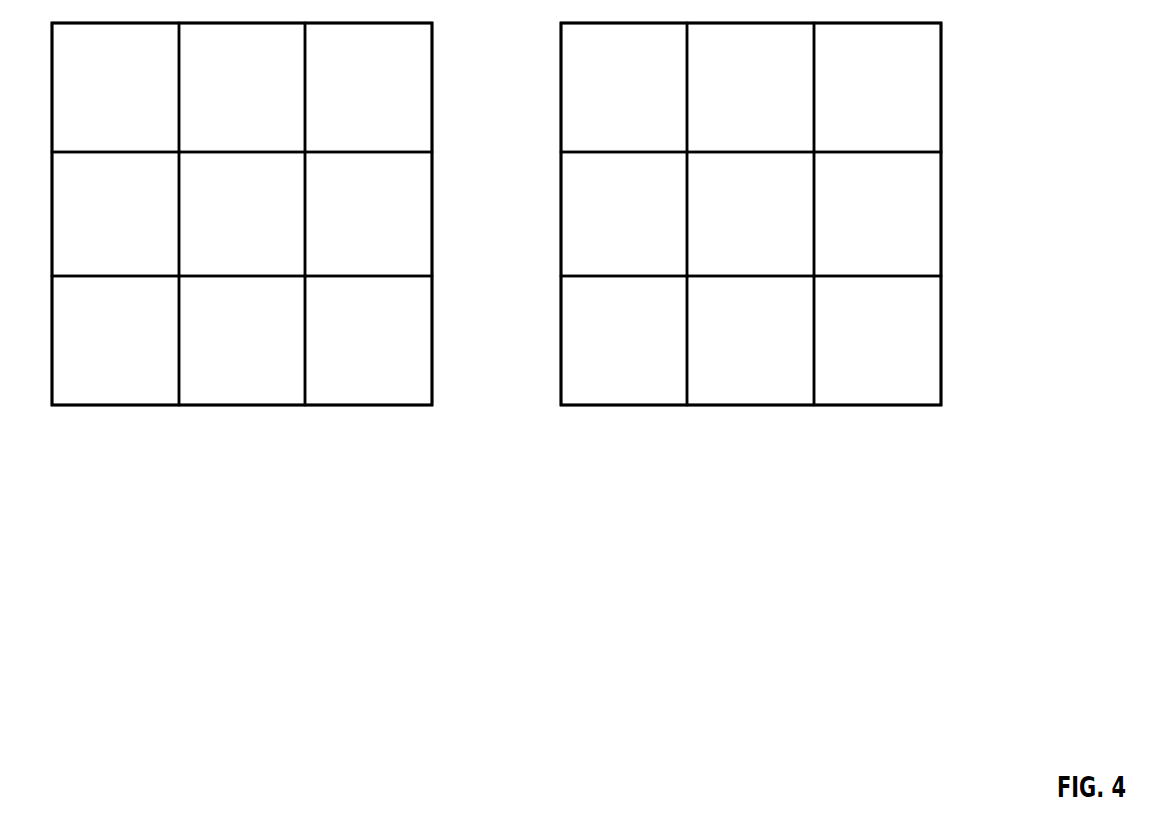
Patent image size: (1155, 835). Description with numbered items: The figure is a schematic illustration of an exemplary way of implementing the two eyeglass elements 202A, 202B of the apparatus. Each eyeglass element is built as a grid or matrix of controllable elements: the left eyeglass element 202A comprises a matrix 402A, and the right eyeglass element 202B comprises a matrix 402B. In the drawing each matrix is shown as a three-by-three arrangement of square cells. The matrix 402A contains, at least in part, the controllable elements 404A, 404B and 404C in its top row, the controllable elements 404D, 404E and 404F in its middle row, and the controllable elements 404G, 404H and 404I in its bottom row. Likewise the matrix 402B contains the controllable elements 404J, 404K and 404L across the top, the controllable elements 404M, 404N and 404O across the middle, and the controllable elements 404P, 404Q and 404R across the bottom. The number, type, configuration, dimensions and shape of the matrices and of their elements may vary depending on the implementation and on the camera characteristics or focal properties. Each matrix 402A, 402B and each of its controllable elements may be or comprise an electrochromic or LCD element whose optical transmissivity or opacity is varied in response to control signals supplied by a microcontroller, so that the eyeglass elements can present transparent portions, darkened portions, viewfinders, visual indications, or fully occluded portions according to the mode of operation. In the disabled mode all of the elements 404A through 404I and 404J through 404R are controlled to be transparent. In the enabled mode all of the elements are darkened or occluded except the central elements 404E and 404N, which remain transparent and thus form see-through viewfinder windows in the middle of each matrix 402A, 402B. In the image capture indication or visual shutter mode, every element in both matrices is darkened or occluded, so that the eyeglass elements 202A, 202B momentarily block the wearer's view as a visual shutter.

The eyeglass element 202A is at (163, 423).
The eyeglass element 202B is at (623, 423).
The matrix of controllable elements 402A is at (353, 405).
The matrix of controllable elements 402B is at (830, 405).
The controllable element 404A is at (115, 87).
The controllable element 404B is at (242, 87).
The controllable element 404C is at (368, 87).
The controllable element 404D is at (115, 214).
The controllable element 404E is at (242, 214).
The controllable element 404F is at (368, 214).
The controllable element 404G is at (115, 340).
The controllable element 404H is at (242, 340).
The controllable element 404I is at (368, 340).
The controllable element 404J is at (624, 87).
The controllable element 404K is at (750, 87).
The controllable element 404L is at (877, 87).
The controllable element 404M is at (624, 214).
The controllable element 404N is at (750, 214).
The controllable element 404O is at (877, 214).
The controllable element 404P is at (624, 340).
The controllable element 404Q is at (750, 340).
The controllable element 404R is at (877, 340).